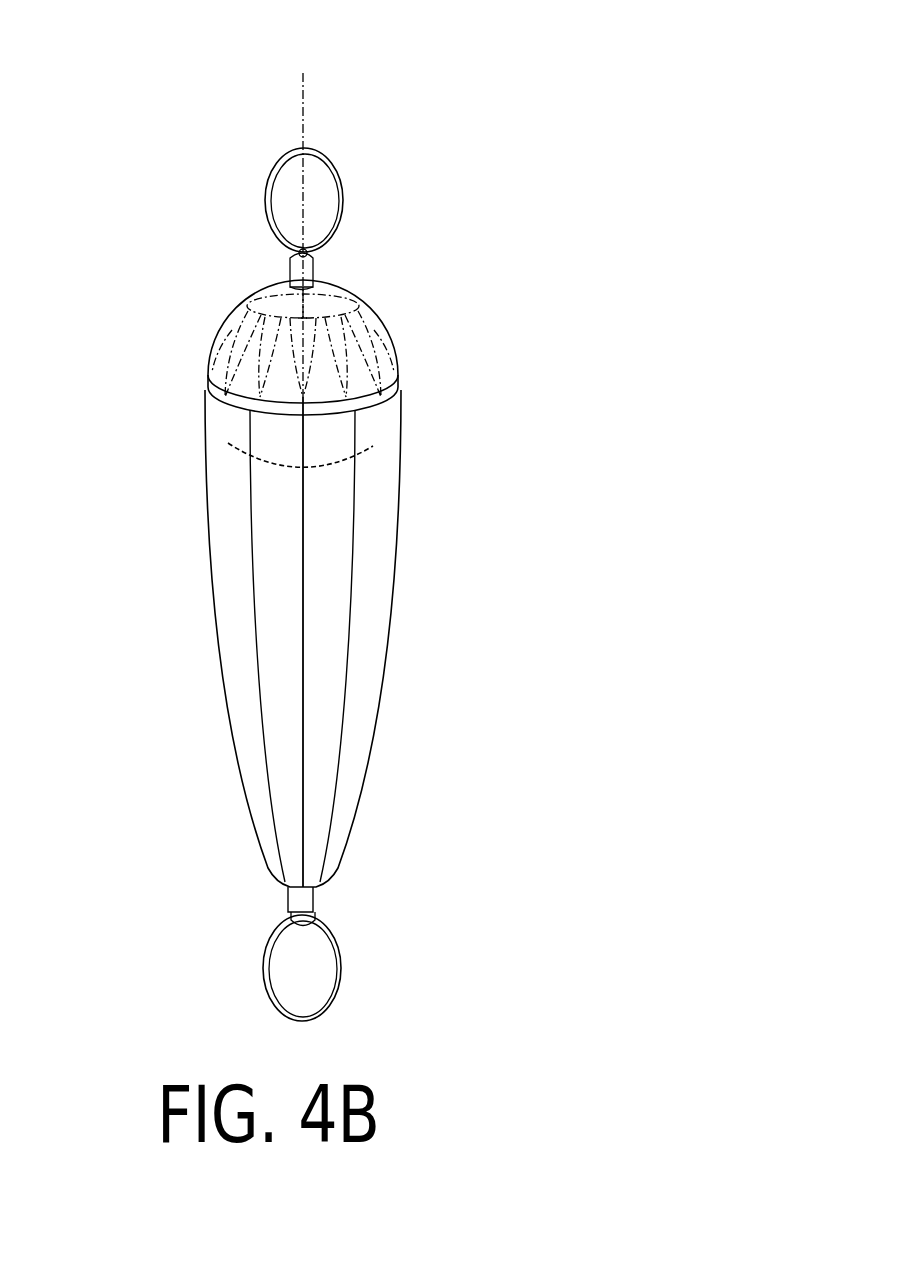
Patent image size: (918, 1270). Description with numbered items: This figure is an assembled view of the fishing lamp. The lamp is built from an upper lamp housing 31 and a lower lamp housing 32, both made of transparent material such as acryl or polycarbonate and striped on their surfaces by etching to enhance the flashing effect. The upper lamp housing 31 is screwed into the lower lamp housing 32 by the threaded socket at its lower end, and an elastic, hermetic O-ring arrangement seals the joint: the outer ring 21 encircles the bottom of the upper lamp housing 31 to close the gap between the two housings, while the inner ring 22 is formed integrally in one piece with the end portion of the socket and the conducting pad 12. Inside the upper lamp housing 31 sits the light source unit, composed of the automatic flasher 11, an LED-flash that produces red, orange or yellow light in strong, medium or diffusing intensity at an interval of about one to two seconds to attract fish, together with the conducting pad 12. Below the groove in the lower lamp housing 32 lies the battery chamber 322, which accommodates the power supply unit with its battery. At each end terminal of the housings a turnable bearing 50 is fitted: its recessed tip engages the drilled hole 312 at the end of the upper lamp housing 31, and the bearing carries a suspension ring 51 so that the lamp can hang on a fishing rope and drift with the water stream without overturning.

The suspension ring 51 is at (342, 203).
The turnable bearing 50 is at (314, 283).
The drilled hole 312 is at (311, 294).
The outer ring 21 is at (232, 387).
The automatic flasher 11 is at (312, 422).
The inner ring 22 is at (370, 424).
The conducting pad 12 is at (323, 437).
The battery chamber 322 is at (303, 570).
The upper lamp housing 31 is at (153, 297).
The lower lamp housing 32 is at (153, 403).